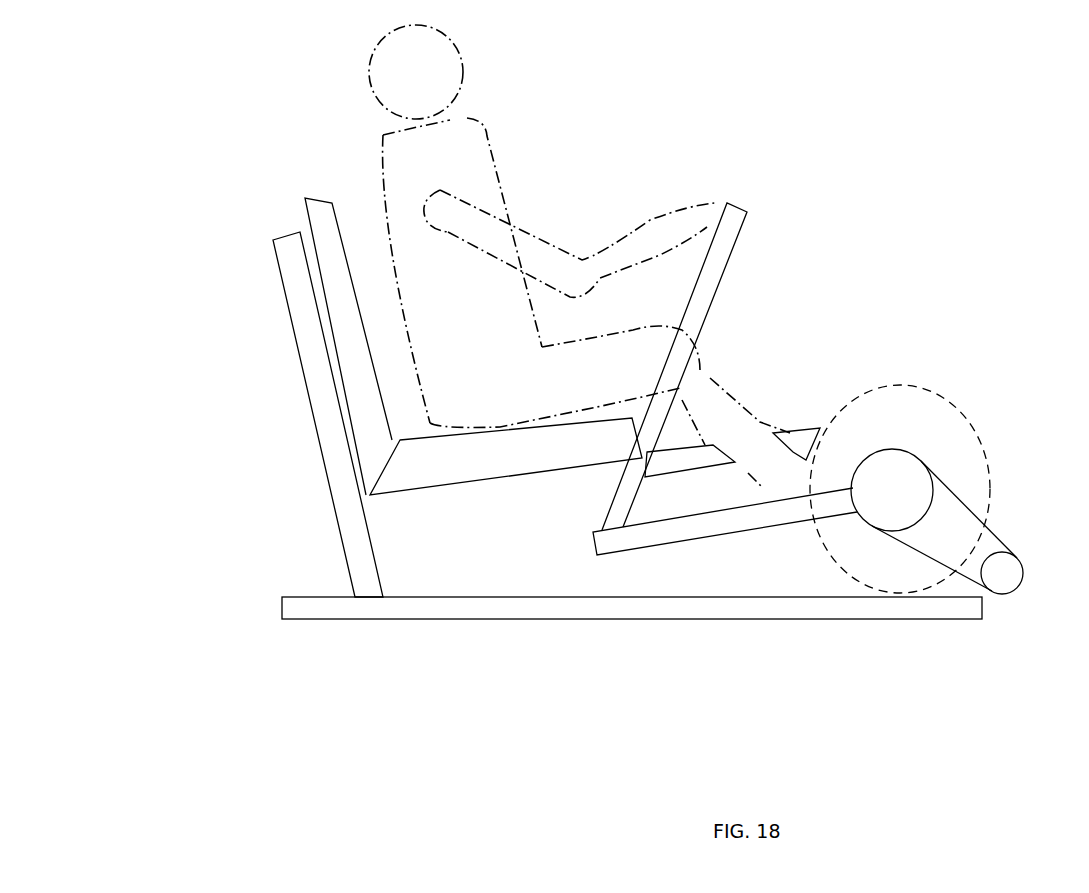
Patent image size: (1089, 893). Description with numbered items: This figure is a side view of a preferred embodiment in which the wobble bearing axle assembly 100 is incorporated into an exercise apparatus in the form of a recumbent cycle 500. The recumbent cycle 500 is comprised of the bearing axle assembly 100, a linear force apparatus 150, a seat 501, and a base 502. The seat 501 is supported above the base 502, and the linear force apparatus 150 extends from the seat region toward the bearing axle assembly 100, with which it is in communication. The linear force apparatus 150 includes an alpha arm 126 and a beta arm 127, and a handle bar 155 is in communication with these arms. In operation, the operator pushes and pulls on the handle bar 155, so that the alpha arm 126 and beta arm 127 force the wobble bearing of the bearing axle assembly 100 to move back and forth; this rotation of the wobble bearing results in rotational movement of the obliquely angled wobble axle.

The recumbent cycle 500 is at (140, 112).
The seat 501 is at (307, 215).
The base 502 is at (613, 618).
The linear force apparatus 150 is at (593, 540).
The handle bar 155 is at (722, 285).
The beta arm 127 is at (697, 452).
The alpha arm 126 is at (765, 500).
The wobble bearing axle assembly 100 is at (895, 485).